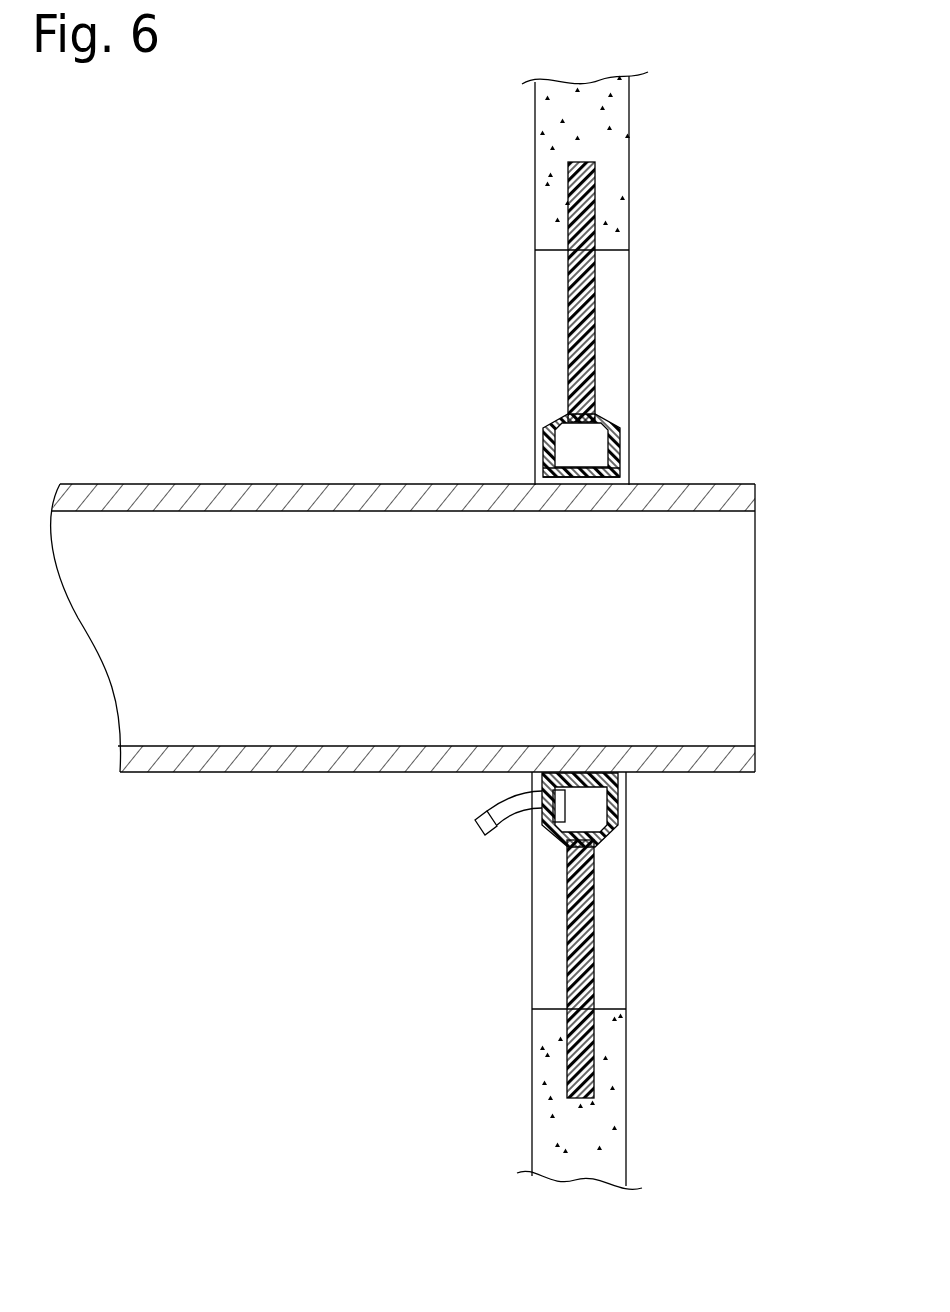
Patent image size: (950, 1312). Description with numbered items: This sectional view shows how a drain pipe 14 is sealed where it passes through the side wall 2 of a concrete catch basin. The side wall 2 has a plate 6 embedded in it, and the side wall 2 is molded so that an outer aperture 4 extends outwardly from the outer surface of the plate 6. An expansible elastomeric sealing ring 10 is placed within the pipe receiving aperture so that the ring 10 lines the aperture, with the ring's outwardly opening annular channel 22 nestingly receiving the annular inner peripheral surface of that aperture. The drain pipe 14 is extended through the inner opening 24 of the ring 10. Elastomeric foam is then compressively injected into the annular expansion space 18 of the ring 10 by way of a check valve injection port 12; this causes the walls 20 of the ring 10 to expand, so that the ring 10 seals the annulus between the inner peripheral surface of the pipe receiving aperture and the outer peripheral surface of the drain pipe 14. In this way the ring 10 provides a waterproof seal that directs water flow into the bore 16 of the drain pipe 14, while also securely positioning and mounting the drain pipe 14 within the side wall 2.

The side wall 2 is at (615, 167).
The outer aperture 4 is at (613, 342).
The plate 6 is at (598, 940).
The expansible elastomeric sealing ring 10 is at (623, 321).
The check valve injection port 12 is at (480, 833).
The drain pipe 14 is at (682, 773).
The bore 16 is at (465, 660).
The annular expansion space 18 is at (578, 443).
The walls 20 is at (545, 443).
The outwardly opening annular channel 22 is at (578, 397).
The inner opening 24 is at (603, 480).